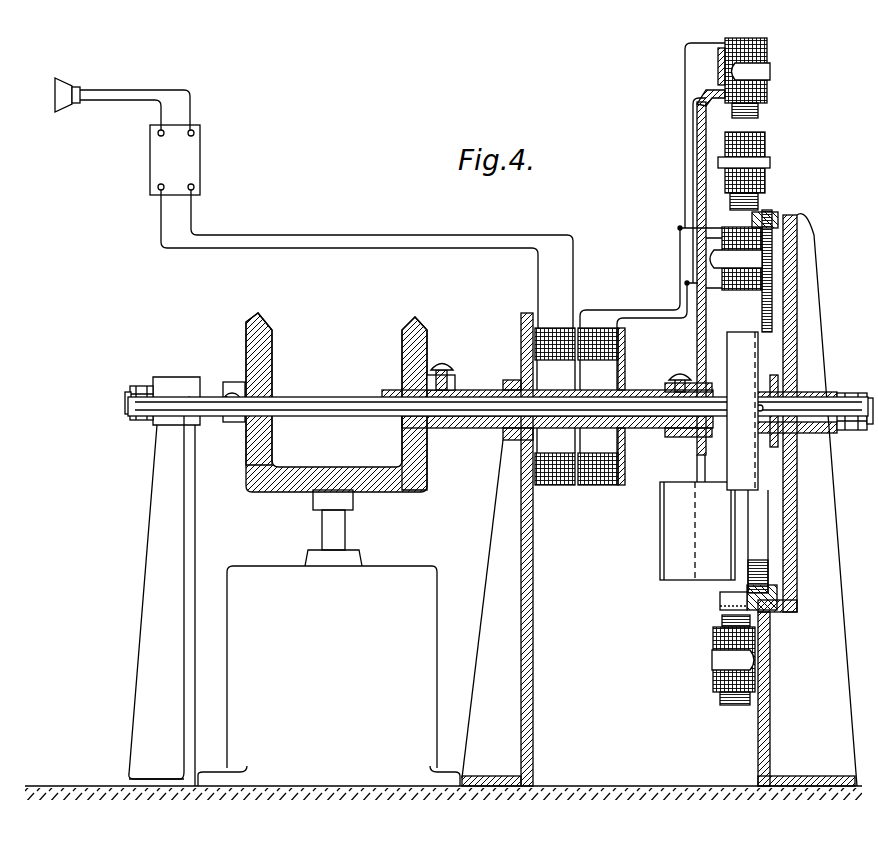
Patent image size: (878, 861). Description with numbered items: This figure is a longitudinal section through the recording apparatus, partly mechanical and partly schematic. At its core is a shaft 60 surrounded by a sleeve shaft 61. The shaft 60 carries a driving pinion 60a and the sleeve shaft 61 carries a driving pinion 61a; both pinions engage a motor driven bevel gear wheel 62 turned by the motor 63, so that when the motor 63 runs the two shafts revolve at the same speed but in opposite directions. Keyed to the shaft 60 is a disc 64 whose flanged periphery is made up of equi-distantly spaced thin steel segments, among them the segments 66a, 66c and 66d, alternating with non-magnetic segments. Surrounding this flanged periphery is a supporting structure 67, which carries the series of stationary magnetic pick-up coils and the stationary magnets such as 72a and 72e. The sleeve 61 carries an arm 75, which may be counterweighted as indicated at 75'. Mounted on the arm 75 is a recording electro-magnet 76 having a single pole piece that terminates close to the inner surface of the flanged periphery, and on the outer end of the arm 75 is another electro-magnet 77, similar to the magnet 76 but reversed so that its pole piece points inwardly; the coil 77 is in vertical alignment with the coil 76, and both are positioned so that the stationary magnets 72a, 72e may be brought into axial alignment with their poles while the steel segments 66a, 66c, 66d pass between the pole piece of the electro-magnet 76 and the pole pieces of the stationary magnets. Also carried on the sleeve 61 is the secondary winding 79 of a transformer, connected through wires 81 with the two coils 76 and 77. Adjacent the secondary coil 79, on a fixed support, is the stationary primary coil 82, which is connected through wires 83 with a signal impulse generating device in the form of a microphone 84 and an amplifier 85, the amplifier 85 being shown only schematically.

The shaft 60 is at (332, 397).
The driving pinion 60a is at (252, 320).
The sleeve shaft 61 is at (482, 391).
The driving pinion 61a is at (414, 318).
The motor driven bevel gear wheel 62 is at (292, 492).
The motor 63 is at (329, 638).
The disc 64 is at (780, 226).
The steel segment 66a is at (764, 222).
The steel segment 66c is at (720, 604).
The steel segment 66d is at (740, 344).
The supporting structure 67 is at (798, 352).
The stationary magnet 72a is at (768, 150).
The stationary magnet 72e is at (714, 679).
The arm 75 is at (683, 286).
The counterweight 75' is at (675, 531).
The recording electro-magnet 76 is at (765, 273).
The electro-magnet 77 is at (769, 56).
The secondary winding 79 is at (603, 487).
The wires 81 is at (629, 311).
The primary coil 82 is at (560, 487).
The wires 83 is at (360, 248).
The microphone 84 is at (55, 94).
The amplifier 85 is at (150, 158).